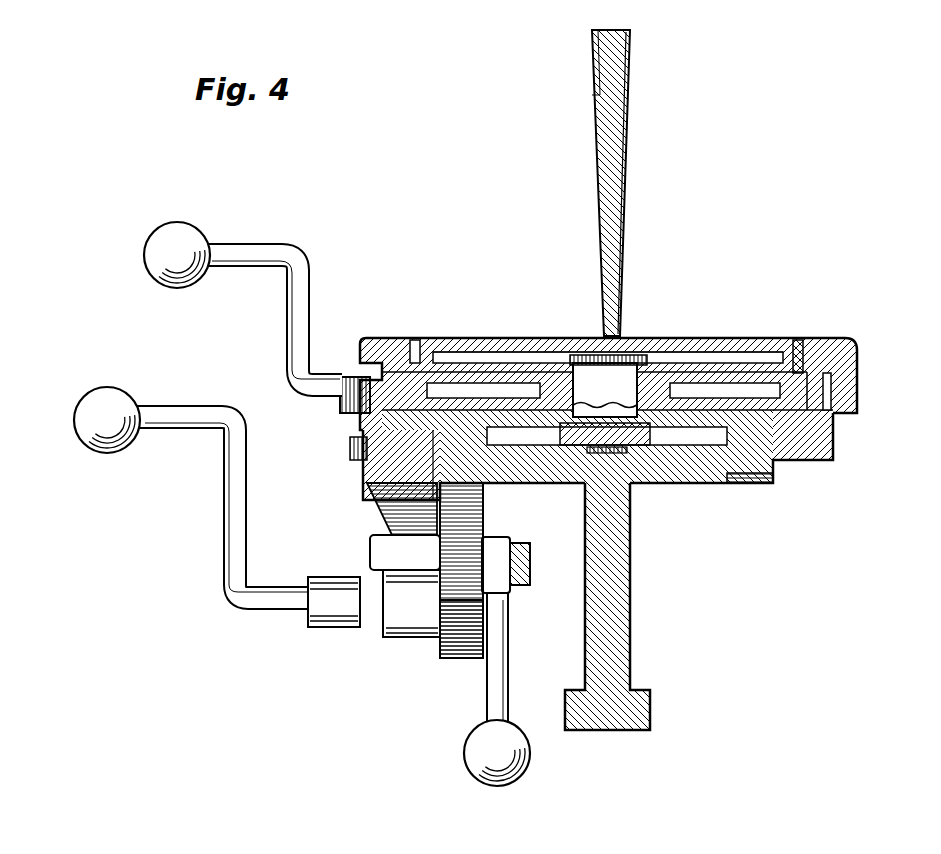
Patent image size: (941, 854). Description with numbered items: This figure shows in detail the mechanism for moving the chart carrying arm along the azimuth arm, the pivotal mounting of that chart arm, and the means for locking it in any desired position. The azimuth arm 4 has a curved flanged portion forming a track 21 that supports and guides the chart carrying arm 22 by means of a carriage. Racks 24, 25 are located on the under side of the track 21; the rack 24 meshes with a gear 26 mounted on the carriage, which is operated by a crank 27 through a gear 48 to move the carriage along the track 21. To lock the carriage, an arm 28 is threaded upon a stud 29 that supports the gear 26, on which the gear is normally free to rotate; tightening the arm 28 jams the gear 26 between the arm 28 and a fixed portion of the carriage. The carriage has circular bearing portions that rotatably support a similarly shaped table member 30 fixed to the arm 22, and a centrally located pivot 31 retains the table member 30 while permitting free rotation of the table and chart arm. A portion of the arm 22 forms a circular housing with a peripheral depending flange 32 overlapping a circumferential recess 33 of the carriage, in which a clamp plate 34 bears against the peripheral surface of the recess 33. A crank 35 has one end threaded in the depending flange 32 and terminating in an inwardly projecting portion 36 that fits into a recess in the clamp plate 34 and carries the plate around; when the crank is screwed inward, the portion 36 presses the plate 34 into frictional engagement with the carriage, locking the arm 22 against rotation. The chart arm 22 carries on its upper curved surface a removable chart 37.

The azimuth arm 4 is at (630, 608).
The track 21 is at (835, 447).
The chart carrying arm 22 is at (857, 350).
The rack 24 is at (486, 503).
The rack 25 is at (772, 484).
The gear 26 is at (482, 522).
The crank 27 is at (243, 533).
The arm 28 is at (508, 648).
The stud 29 is at (652, 362).
The table member 30 is at (600, 342).
The pivot 31 is at (605, 404).
The depending flange 32 is at (360, 354).
The circumferential recess 33 is at (832, 387).
The clamp plate 34 is at (345, 410).
The crank 35 is at (292, 300).
The inwardly projecting portion 36 is at (411, 346).
The chart 37 is at (472, 347).
The gear 48 is at (450, 662).